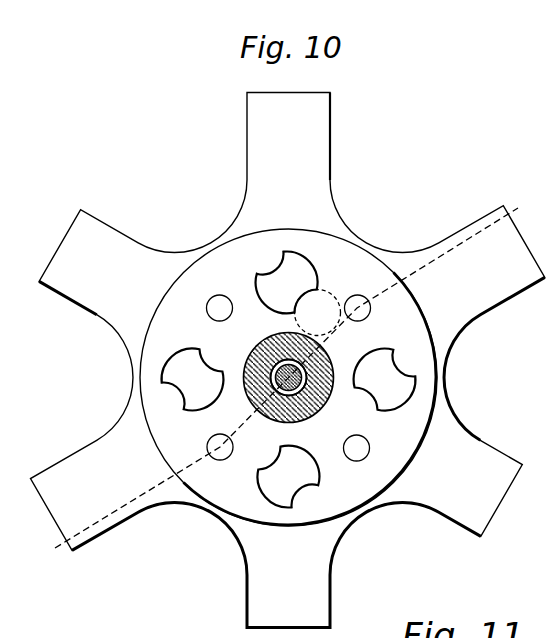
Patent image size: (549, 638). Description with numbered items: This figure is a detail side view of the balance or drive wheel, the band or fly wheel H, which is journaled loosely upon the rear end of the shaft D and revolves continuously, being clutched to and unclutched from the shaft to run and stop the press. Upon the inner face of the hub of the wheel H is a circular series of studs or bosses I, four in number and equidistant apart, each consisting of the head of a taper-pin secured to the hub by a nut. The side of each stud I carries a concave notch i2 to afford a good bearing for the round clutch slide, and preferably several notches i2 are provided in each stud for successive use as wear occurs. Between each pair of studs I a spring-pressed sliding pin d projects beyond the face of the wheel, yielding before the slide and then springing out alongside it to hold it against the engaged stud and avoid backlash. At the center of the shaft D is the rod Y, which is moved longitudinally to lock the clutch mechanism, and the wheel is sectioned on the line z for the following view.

The band or fly wheel H is at (316, 156).
The studs or bosses I is at (289, 380).
The concave notch i2 is at (408, 361).
The sliding pin d is at (231, 306).
The shaft D is at (317, 397).
The rod Y is at (274, 389).
The section line z- z is at (285, 379).